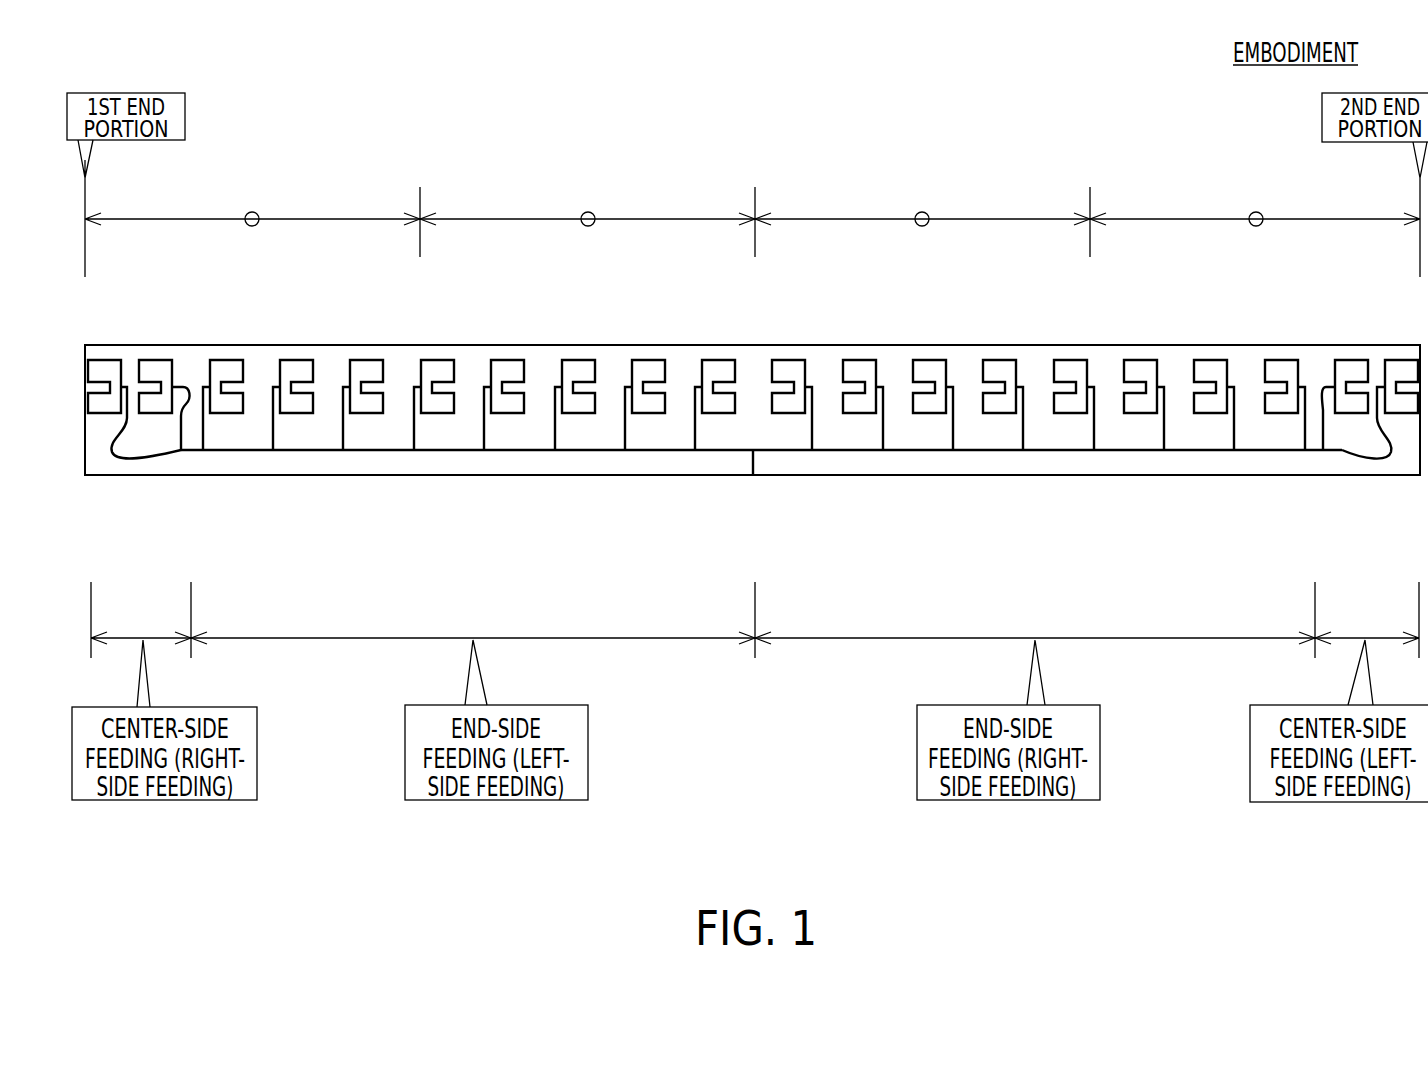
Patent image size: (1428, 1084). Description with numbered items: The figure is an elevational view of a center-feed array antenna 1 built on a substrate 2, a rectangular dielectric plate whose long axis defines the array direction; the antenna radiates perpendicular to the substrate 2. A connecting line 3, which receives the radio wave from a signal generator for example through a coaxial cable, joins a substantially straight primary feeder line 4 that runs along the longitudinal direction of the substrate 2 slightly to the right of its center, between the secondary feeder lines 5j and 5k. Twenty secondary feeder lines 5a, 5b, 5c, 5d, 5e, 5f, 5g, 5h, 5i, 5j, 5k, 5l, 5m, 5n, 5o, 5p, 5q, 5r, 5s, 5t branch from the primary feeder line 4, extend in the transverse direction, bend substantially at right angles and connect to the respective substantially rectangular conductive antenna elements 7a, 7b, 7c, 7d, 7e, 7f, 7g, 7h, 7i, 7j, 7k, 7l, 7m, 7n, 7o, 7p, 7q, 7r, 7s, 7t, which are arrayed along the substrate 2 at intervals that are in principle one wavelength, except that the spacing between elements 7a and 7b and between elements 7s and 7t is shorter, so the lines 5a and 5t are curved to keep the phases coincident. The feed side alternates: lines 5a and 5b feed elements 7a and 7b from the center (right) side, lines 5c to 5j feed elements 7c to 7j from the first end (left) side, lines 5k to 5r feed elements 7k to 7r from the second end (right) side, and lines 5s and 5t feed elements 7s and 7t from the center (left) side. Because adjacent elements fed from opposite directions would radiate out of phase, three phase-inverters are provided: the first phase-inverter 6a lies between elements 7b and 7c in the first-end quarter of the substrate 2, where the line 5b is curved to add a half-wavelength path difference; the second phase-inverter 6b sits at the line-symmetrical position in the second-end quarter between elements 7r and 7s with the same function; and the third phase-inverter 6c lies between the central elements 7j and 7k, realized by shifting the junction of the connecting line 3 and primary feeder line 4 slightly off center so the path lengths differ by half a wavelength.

The array antenna 1 is at (238, 135).
The substrate 2 is at (683, 362).
The connecting line 3 is at (781, 474).
The primary feeder line 4 is at (753, 472).
The secondary feeder line 5a is at (101, 432).
The secondary feeder line 5b is at (165, 430).
The secondary feeder line 5c is at (203, 430).
The secondary feeder line 5d is at (273, 430).
The secondary feeder line 5e is at (343, 430).
The secondary feeder line 5f is at (414, 430).
The secondary feeder line 5g is at (484, 430).
The secondary feeder line 5h is at (555, 430).
The secondary feeder line 5i is at (625, 430).
The secondary feeder line 5j is at (695, 430).
The secondary feeder line 5k is at (812, 430).
The secondary feeder line 5l is at (883, 430).
The secondary feeder line 5m is at (953, 430).
The secondary feeder line 5n is at (1023, 430).
The secondary feeder line 5o is at (1094, 430).
The secondary feeder line 5p is at (1164, 430).
The secondary feeder line 5q is at (1234, 430).
The secondary feeder line 5r is at (1305, 432).
The secondary feeder line 5s is at (1323, 430).
The secondary feeder line 5t is at (1393, 440).
The first phase-inverter 6a is at (197, 369).
The second phase-inverter 6b is at (1318, 359).
The third phase-inverter 6c is at (760, 411).
The antenna element 7a is at (106, 366).
The antenna element 7b is at (157, 366).
The antenna element 7c is at (228, 366).
The antenna element 7d is at (298, 366).
The antenna element 7e is at (368, 366).
The antenna element 7f is at (439, 366).
The antenna element 7g is at (509, 366).
The antenna element 7h is at (580, 366).
The antenna element 7i is at (650, 366).
The antenna element 7j is at (720, 366).
The antenna element 7k is at (790, 366).
The antenna element 7l is at (861, 366).
The antenna element 7m is at (931, 366).
The antenna element 7n is at (1001, 366).
The antenna element 7o is at (1072, 366).
The antenna element 7p is at (1142, 366).
The antenna element 7q is at (1212, 366).
The antenna element 7r is at (1283, 366).
The antenna element 7s is at (1353, 366).
The antenna element 7t is at (1403, 366).